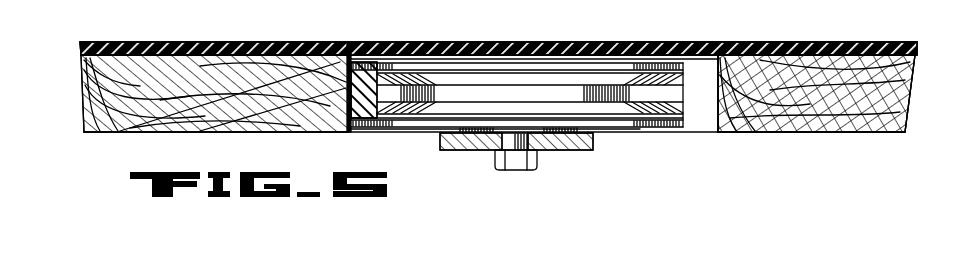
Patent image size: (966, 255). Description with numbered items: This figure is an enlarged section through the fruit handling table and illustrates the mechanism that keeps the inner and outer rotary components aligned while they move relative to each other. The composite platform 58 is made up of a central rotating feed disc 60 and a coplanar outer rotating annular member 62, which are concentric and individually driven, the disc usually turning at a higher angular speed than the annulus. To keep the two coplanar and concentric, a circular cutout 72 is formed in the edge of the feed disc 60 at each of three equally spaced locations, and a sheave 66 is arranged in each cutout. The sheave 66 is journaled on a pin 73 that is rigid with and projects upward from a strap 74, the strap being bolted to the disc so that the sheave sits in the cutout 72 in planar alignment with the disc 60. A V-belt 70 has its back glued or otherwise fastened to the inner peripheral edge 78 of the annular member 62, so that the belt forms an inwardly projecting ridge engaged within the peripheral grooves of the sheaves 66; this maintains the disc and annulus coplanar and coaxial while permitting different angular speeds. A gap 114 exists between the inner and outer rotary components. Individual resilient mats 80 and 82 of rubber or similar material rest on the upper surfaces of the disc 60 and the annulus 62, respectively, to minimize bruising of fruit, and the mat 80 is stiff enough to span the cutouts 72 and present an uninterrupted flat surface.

The composite platform 58 is at (162, 38).
The feed disc 60 is at (884, 88).
The annular member 62 is at (116, 87).
The sheave 66 is at (630, 112).
The V-belt 70 is at (330, 122).
The circular cutout 72 is at (714, 112).
The pin 73 is at (508, 140).
The strap 74 is at (583, 140).
The inner peripheral edge 78 is at (360, 133).
The resilient mat 80 is at (664, 44).
The resilient mat 82 is at (270, 48).
The gap 114 is at (349, 43).